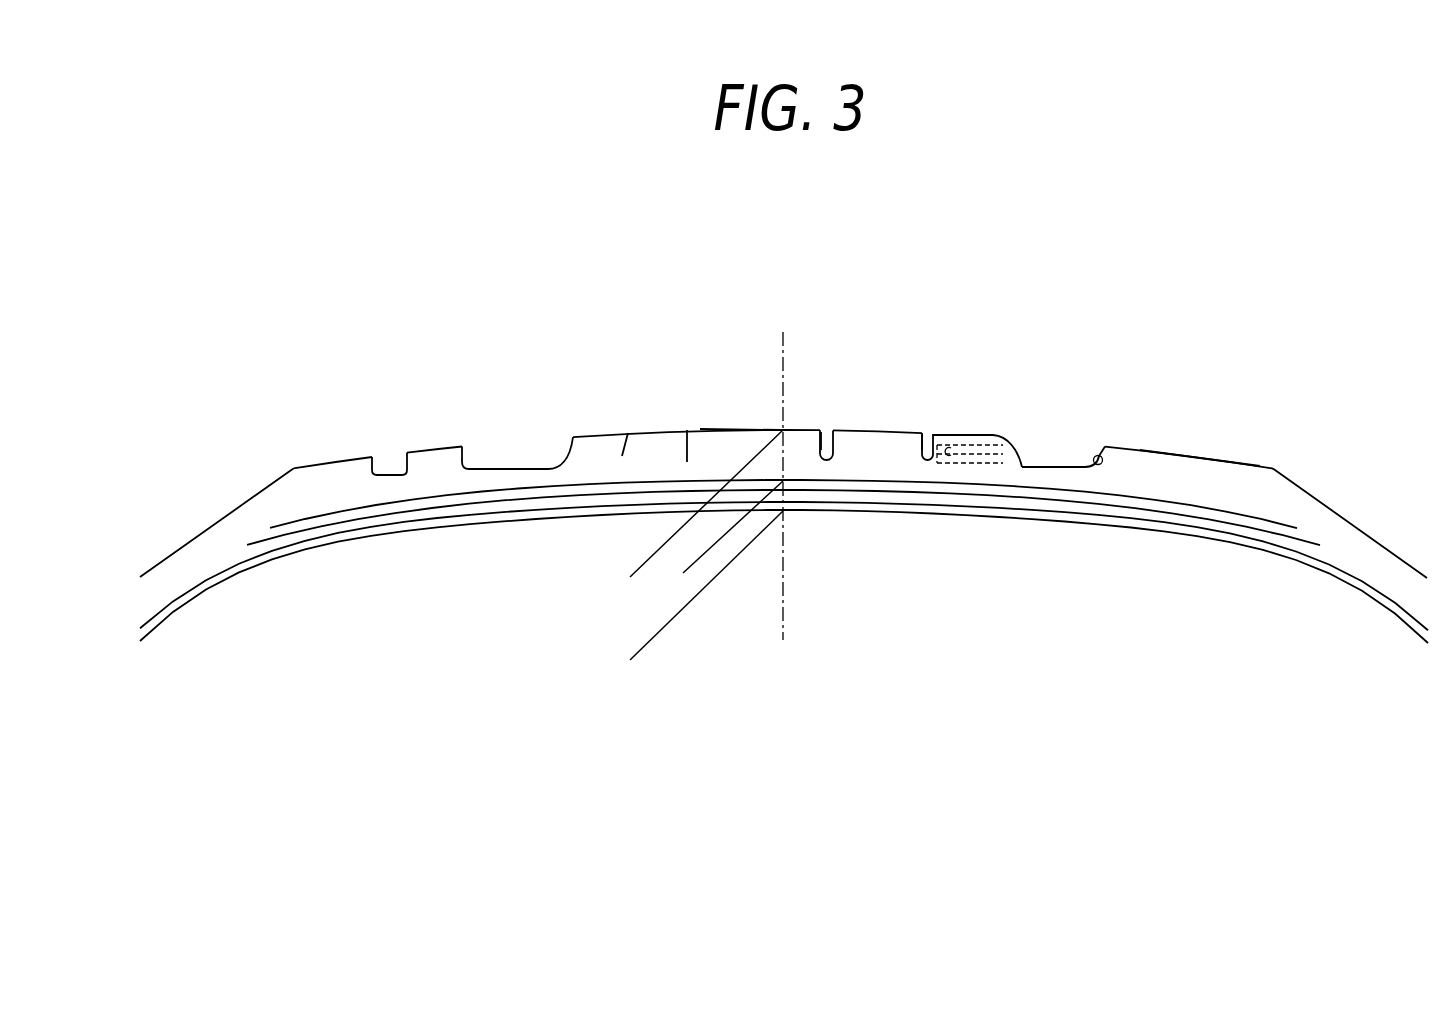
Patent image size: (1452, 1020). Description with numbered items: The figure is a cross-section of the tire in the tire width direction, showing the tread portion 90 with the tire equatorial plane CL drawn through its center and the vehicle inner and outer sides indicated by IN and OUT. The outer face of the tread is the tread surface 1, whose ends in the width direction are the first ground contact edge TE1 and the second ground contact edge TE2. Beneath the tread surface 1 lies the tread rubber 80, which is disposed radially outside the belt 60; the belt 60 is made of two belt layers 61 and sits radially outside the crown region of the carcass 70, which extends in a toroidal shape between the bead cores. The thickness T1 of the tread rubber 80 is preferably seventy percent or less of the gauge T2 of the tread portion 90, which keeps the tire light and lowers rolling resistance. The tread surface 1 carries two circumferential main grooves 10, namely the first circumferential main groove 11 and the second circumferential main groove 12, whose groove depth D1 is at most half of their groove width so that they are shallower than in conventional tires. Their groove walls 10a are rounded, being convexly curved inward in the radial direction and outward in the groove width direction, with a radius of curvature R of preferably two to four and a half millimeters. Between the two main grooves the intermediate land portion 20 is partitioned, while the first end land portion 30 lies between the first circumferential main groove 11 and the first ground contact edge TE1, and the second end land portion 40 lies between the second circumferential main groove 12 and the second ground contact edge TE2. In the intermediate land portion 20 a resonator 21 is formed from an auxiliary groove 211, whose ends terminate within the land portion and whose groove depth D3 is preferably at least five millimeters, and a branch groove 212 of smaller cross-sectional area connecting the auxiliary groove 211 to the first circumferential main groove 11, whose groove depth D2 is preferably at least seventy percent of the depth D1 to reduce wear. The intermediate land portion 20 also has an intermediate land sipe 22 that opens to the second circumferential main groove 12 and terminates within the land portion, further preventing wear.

The tread surface 1 is at (1140, 423).
The tread portion 90 is at (549, 320).
The second end land portion 40 is at (430, 448).
The second circumferential main groove 12 is at (533, 448).
The circumferential main groove 10 is at (830, 377).
The groove wall 10a is at (566, 442).
The tread rubber 80 is at (628, 433).
The intermediate land sipe 22 is at (687, 430).
The intermediate land portion 20 is at (747, 426).
The tire equatorial plane CL is at (783, 470).
The resonator 21 is at (921, 401).
The auxiliary groove 211 is at (826, 426).
The branch groove 212 is at (950, 431).
The groove depth of the auxiliary groove D3 is at (935, 460).
The groove depth of the branch groove D2 is at (977, 483).
The groove depth of the circumferential main groove D1 is at (500, 443).
The radius of curvature of the groove walls R is at (1004, 455).
The first circumferential main groove 11 is at (1050, 453).
The first end land portion 30 is at (1188, 441).
The first ground contact edge TE1 is at (1272, 468).
The second ground contact edge TE2 is at (295, 467).
The vehicle inner side IN is at (278, 369).
The vehicle outer side OUT is at (1208, 363).
The belt layer 61 is at (1215, 509).
The belt 60 is at (1324, 522).
The carcass 70 is at (1377, 592).
The thickness of the tread rubber T1 is at (683, 526).
The gauge of the tread portion T2 is at (630, 577).